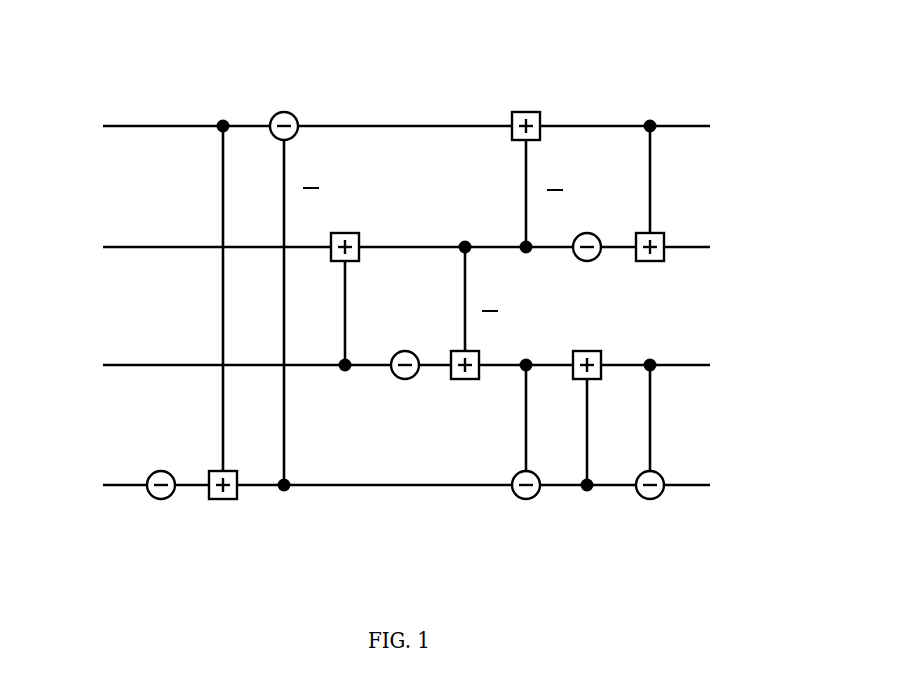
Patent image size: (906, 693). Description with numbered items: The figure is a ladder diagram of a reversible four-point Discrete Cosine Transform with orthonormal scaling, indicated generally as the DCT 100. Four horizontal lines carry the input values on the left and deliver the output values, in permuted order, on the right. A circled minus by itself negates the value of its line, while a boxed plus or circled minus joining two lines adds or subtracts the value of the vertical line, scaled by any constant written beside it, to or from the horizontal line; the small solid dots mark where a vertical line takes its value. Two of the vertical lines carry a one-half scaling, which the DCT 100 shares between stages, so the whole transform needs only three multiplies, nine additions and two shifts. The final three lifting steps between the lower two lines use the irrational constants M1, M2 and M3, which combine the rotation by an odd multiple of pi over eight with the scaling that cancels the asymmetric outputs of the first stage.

The reversible 4-point DCT with orthonormal scaling 100 is at (382, 50).
The multiplication constant M1 is at (542, 432).
The multiplication constant M2 is at (603, 418).
The multiplication constant M3 is at (665, 432).